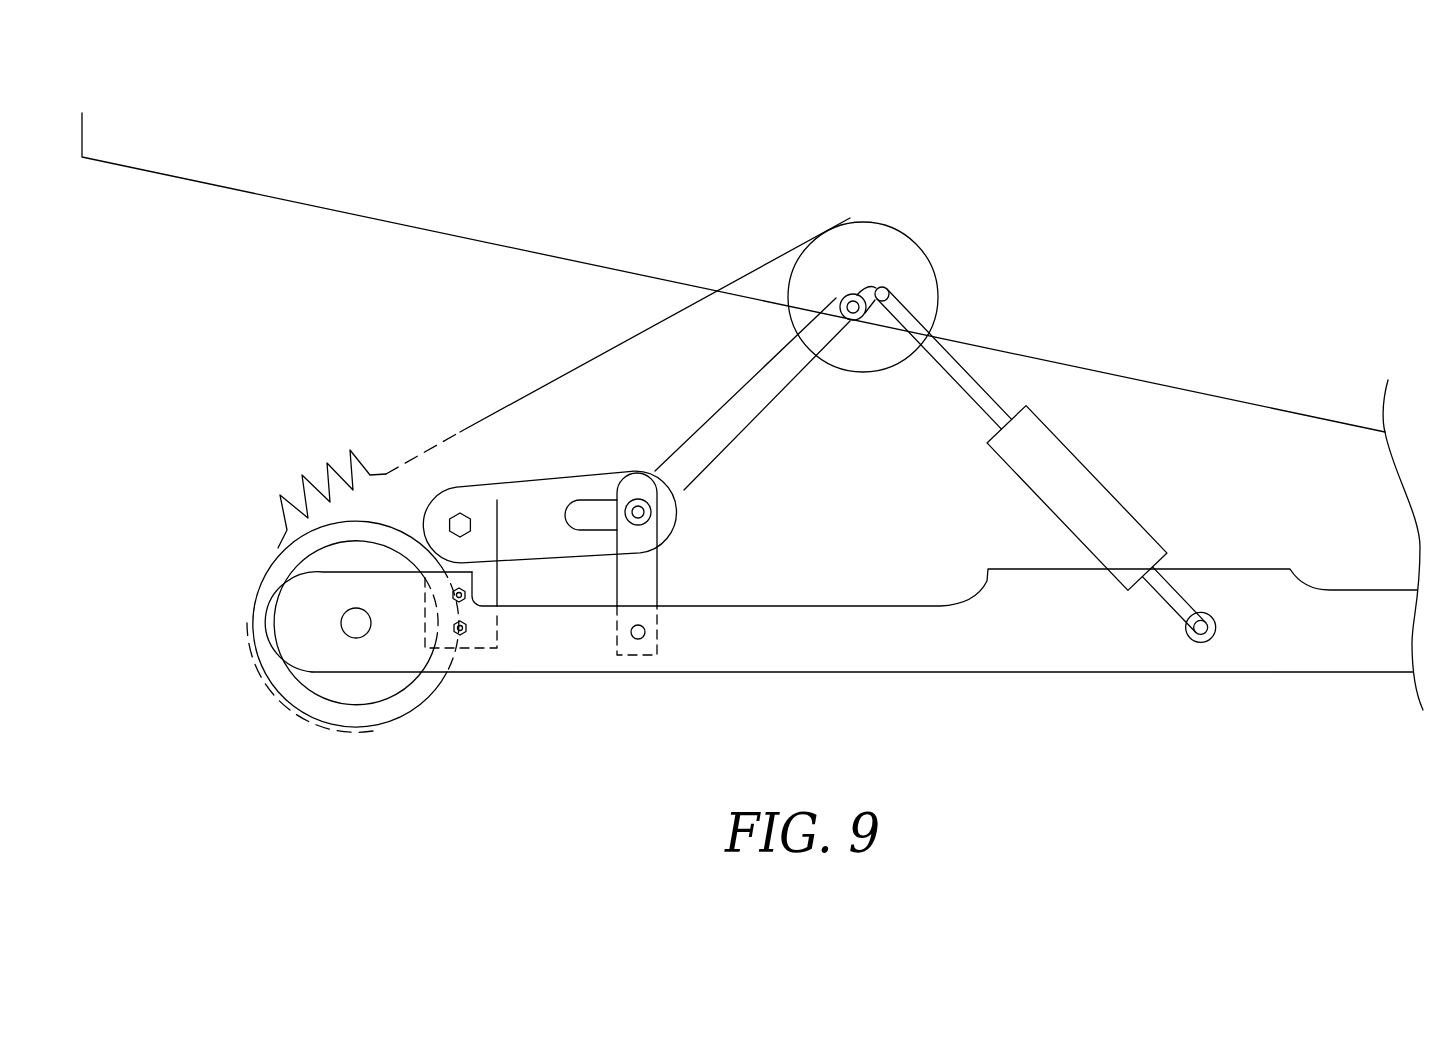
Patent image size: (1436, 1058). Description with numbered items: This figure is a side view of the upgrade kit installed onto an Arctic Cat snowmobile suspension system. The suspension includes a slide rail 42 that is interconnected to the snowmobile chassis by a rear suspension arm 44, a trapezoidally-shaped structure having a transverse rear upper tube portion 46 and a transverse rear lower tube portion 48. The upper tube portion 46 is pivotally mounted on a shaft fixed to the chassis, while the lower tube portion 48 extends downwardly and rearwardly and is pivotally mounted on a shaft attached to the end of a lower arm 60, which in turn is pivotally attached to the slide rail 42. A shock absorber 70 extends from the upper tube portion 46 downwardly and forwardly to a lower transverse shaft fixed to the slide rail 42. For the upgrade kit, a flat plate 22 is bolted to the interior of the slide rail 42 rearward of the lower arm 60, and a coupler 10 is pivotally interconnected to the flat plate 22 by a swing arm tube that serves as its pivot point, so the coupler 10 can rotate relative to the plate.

The coupler 10 is at (508, 479).
The flat plate 22 is at (498, 588).
The slide rail 42 is at (868, 637).
The rear suspension arm 44 is at (744, 440).
The rear upper tube portion 46 is at (852, 294).
The rear lower tube portion 48 is at (643, 525).
The lower arm 60 is at (647, 578).
The shock absorber 70 is at (1043, 488).